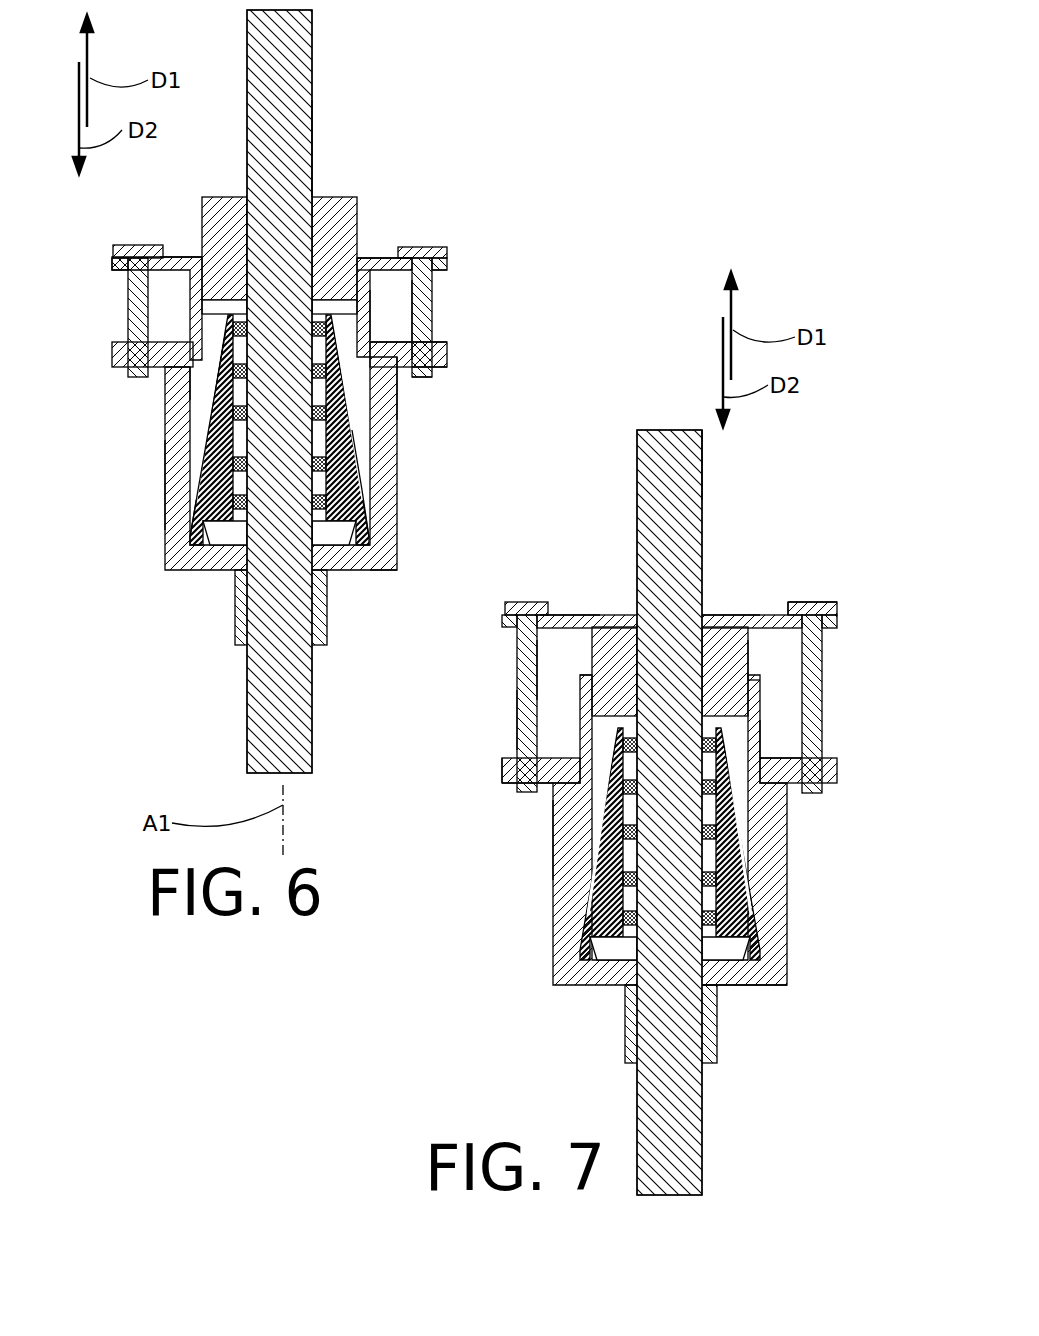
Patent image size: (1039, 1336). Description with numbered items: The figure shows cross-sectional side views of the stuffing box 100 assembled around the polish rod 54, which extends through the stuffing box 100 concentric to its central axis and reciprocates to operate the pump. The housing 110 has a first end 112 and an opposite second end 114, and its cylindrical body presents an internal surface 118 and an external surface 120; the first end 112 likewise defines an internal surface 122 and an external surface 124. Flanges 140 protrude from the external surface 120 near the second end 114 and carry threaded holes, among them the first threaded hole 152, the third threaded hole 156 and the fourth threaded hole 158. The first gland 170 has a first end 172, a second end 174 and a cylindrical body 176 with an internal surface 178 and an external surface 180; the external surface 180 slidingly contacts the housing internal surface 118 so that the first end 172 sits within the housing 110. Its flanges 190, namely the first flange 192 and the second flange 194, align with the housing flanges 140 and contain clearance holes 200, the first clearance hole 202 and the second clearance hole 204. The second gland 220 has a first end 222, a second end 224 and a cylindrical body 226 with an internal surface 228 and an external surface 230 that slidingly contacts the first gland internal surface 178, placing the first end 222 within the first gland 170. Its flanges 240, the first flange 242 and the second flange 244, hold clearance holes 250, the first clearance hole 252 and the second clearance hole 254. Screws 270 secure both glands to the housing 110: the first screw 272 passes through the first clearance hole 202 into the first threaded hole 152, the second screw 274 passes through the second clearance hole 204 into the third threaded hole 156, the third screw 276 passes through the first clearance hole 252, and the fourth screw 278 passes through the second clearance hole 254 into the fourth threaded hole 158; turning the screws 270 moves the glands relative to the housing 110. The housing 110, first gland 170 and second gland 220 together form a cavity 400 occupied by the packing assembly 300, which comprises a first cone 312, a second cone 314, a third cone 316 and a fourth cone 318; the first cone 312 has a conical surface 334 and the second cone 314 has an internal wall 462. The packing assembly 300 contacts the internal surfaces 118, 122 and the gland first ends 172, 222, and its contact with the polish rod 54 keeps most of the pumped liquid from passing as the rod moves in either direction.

In FIG. 6, the polish rod 54 is at (292, 50).
In FIG. 7, the polish rod 54 is at (640, 1112).
In FIG. 6, the stuffing box 100 is at (386, 136).
In FIG. 7, the stuffing box 100 is at (731, 485).
In FIG. 6, the housing 110 is at (165, 504).
In FIG. 7, the housing 110 is at (553, 795).
In FIG. 7, the first end 112 is at (746, 987).
In FIG. 6, the second end 114 is at (236, 590).
In FIG. 7, the second end 114 is at (671, 1024).
In FIG. 6, the internal surface 118 is at (199, 376).
In FIG. 6, the external surface 120 is at (163, 485).
In FIG. 6, the internal surface 122 is at (226, 541).
In FIG. 6, the external surface 124 is at (396, 571).
In FIG. 6, the flanges 140 is at (448, 362).
In FIG. 7, the flanges 140 is at (500, 771).
In FIG. 6, the first threaded hole 152 is at (440, 368).
In FIG. 6, the third threaded hole 156 is at (116, 368).
In FIG. 7, the fourth threaded hole 158 is at (513, 783).
In FIG. 6, the first gland 170 is at (446, 246).
In FIG. 7, the first gland 170 is at (516, 722).
In FIG. 6, the first end 172 is at (394, 388).
In FIG. 6, the second end 174 is at (386, 250).
In FIG. 6, the cylindrical body 176 is at (393, 333).
In FIG. 6, the internal surface 178 is at (449, 354).
In FIG. 7, the internal surface 178 is at (551, 833).
In FIG. 6, the external surface 180 is at (373, 300).
In FIG. 7, the external surface 180 is at (577, 708).
In FIG. 6, the flanges 190 is at (186, 256).
In FIG. 6, the first flange 192 is at (407, 256).
In FIG. 6, the second flange 194 is at (176, 254).
In FIG. 6, the clearance holes 200 is at (441, 268).
In FIG. 6, the first clearance hole 202 is at (372, 285).
In FIG. 6, the second clearance hole 204 is at (113, 268).
In FIG. 6, the second gland 220 is at (232, 194).
In FIG. 7, the second gland 220 is at (773, 614).
In FIG. 6, the first end 222 is at (226, 324).
In FIG. 7, the first end 222 is at (766, 757).
In FIG. 7, the second end 224 is at (743, 611).
In FIG. 7, the cylindrical body 226 is at (750, 643).
In FIG. 7, the internal surface 228 is at (751, 692).
In FIG. 7, the external surface 230 is at (750, 658).
In FIG. 7, the flanges 240 is at (577, 612).
In FIG. 7, the first flange 242 is at (797, 602).
In FIG. 7, the second flange 244 is at (567, 614).
In FIG. 7, the clearance holes 250 is at (828, 626).
In FIG. 7, the first clearance hole 252 is at (822, 605).
In FIG. 7, the second clearance hole 254 is at (506, 628).
In FIG. 6, the screws 270 is at (448, 250).
In FIG. 7, the screws 270 is at (519, 600).
In FIG. 6, the first screw 272 is at (437, 262).
In FIG. 6, the second screw 274 is at (113, 250).
In FIG. 7, the third screw 276 is at (762, 735).
In FIG. 7, the fourth screw 278 is at (531, 657).
In FIG. 6, the packing assembly 300 is at (349, 537).
In FIG. 7, the packing assembly 300 is at (615, 942).
In FIG. 6, the first cone 312 is at (197, 542).
In FIG. 6, the second cone 314 is at (197, 522).
In FIG. 6, the third cone 316 is at (198, 440).
In FIG. 6, the fourth cone 318 is at (232, 330).
In FIG. 7, the fourth cone 318 is at (753, 742).
In FIG. 6, the conical surface 334 is at (364, 509).
In FIG. 6, the cavity 400 is at (323, 540).
In FIG. 6, the internal wall 462 is at (362, 497).